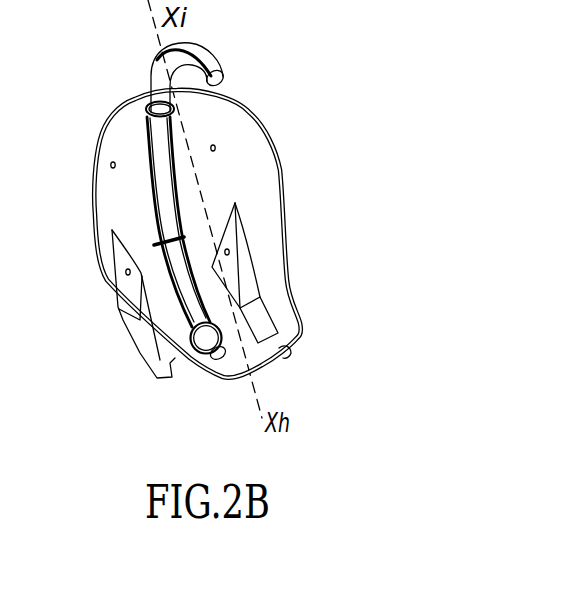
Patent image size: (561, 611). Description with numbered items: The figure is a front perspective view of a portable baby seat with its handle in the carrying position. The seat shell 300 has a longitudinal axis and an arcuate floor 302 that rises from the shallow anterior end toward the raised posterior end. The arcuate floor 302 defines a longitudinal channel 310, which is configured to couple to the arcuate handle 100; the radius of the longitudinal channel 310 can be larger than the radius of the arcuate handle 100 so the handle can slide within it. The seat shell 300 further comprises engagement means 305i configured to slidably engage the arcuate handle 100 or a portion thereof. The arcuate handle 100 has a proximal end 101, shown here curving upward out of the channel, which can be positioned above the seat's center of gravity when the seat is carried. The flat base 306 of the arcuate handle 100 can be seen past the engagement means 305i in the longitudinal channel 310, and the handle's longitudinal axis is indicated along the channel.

The arcuate handle 100 is at (152, 88).
The proximal end 101 is at (228, 80).
The seat shell 300 is at (263, 232).
The arcuate floor 302 is at (197, 182).
The engagement means 305i is at (152, 221).
The flat base 306 is at (213, 358).
The longitudinal channel 310 is at (152, 176).